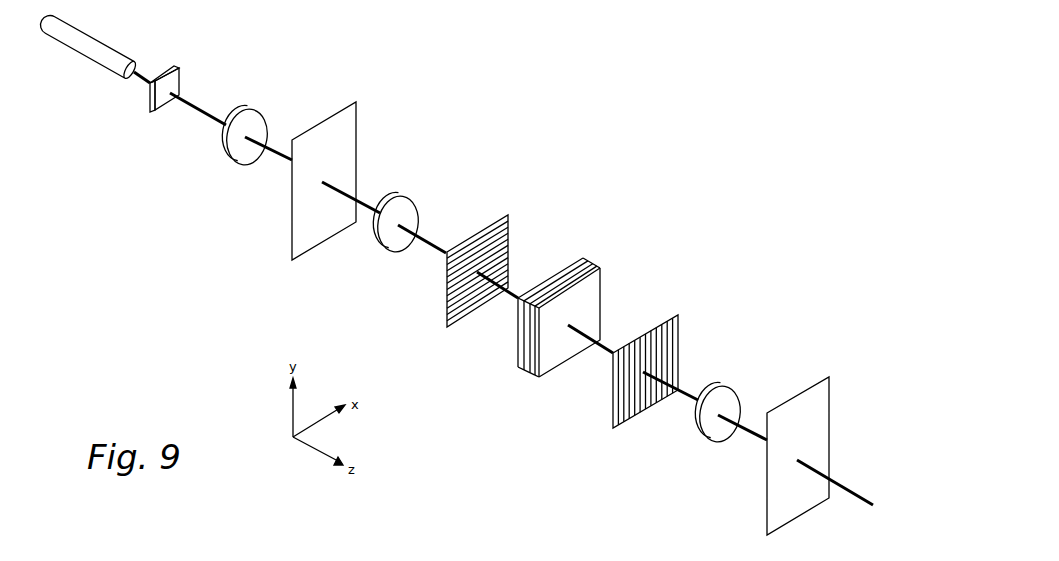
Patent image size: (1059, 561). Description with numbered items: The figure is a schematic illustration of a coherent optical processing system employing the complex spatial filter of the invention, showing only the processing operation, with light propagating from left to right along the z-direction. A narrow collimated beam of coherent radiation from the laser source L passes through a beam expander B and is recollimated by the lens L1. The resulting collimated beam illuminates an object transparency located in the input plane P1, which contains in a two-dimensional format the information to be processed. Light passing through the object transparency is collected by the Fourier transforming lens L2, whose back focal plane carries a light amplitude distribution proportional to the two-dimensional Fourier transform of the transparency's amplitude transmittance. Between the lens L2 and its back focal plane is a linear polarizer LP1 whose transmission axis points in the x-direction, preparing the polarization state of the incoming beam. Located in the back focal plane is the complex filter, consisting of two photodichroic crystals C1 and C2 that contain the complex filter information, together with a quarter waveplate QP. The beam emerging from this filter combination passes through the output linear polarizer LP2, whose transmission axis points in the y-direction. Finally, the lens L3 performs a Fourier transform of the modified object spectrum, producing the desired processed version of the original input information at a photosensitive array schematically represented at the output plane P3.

The laser source L is at (87, 46).
The beam expander B is at (159, 99).
The lens L1 is at (239, 139).
The input plane P1 is at (324, 181).
The Fourier transforming lens L2 is at (393, 232).
The linear polarizer LP1 is at (464, 280).
The quarter waveplate QP is at (527, 371).
The photodichroic crystal C1 is at (583, 257).
The photodichroic crystal C2 is at (602, 292).
The output linear polarizer LP2 is at (635, 387).
The final lens L3 is at (713, 423).
The output plane P3 is at (798, 456).